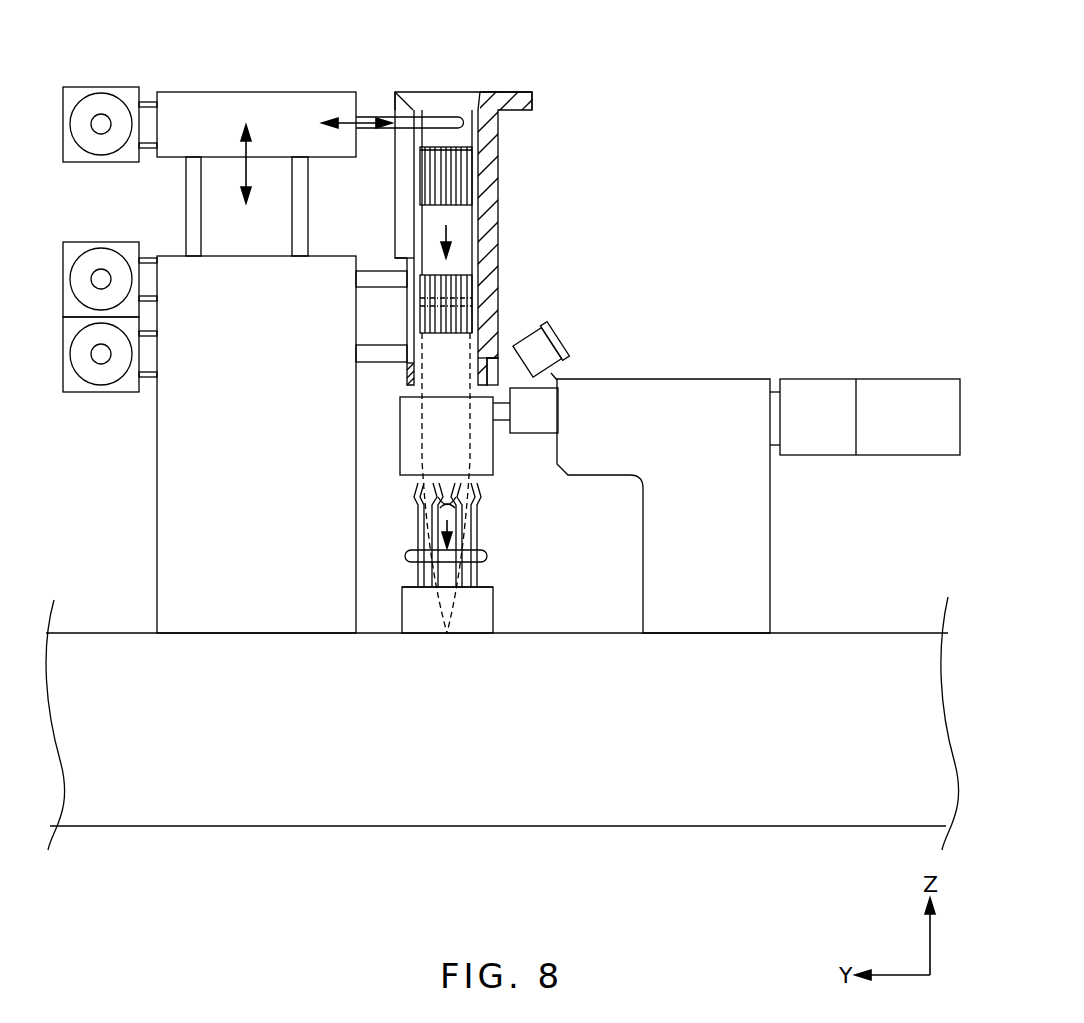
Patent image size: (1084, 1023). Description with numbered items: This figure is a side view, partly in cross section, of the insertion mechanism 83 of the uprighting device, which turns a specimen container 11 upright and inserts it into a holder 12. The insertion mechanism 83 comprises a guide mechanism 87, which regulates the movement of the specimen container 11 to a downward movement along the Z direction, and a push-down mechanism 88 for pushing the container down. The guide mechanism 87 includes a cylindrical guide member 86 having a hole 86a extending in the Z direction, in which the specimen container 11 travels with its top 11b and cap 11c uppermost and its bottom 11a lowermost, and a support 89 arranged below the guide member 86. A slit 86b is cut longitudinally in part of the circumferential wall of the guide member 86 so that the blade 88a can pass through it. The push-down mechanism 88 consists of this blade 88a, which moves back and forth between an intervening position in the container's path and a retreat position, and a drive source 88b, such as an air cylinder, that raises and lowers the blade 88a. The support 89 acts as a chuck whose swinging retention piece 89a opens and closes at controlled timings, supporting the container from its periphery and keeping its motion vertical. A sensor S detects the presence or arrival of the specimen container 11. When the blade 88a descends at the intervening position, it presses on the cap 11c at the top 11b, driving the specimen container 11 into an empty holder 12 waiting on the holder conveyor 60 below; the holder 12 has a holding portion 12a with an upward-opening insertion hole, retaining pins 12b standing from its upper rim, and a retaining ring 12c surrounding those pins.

The push-down mechanism 88 is at (316, 91).
The blade 88a is at (445, 112).
The drive source 88b is at (170, 493).
The insertion mechanism 83 is at (568, 70).
The guide member 86 is at (497, 212).
The hole 86a is at (480, 240).
The slit 86b is at (407, 202).
The guide mechanism 87 is at (497, 287).
The specimen container 11 is at (447, 187).
The bottom 11a is at (440, 512).
The top 11b is at (447, 149).
The cap 11c is at (473, 160).
The sensor S is at (546, 338).
The support 89 is at (687, 379).
The retention piece 89a is at (493, 446).
The holder 12 is at (493, 619).
The holding portion 12a is at (493, 596).
The retaining pin 12b is at (480, 523).
The retaining ring 12c is at (487, 555).
The holder conveyor 60 is at (546, 803).